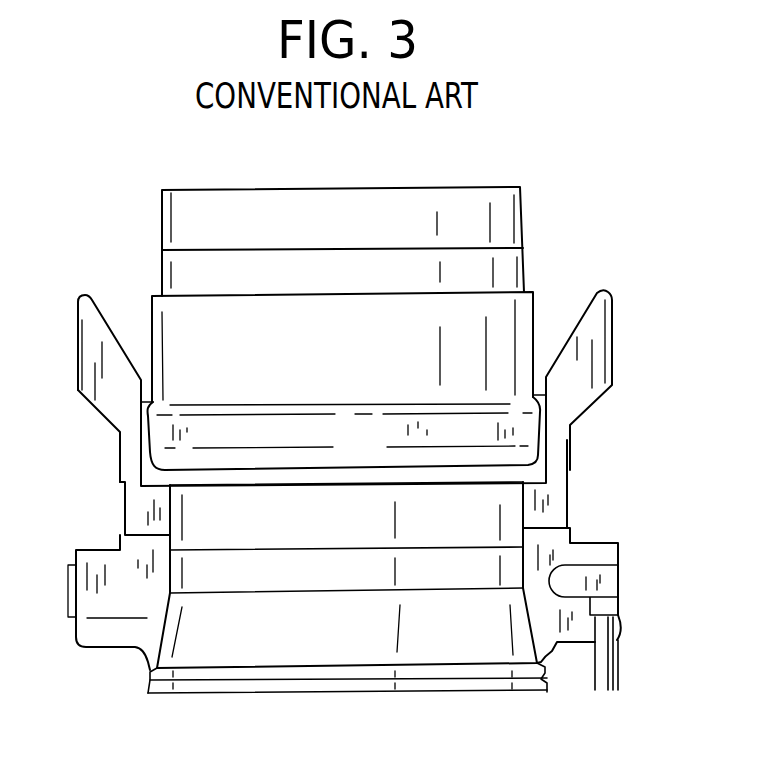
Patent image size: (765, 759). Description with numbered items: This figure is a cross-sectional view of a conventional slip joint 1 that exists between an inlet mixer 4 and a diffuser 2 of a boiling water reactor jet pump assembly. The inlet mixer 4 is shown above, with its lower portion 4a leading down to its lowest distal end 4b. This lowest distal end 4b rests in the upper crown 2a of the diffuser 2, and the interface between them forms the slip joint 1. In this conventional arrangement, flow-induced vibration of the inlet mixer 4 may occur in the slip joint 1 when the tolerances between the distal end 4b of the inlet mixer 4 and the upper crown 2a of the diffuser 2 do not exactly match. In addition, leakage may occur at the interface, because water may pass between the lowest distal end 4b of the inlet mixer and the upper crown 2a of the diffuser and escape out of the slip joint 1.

The slip joint 1 is at (548, 441).
The diffuser 2 is at (478, 630).
The upper crown 2a is at (578, 468).
The inlet mixer 4 is at (524, 207).
The battery unit lower case 4a is at (533, 315).
The lowest distal end 4b is at (152, 463).